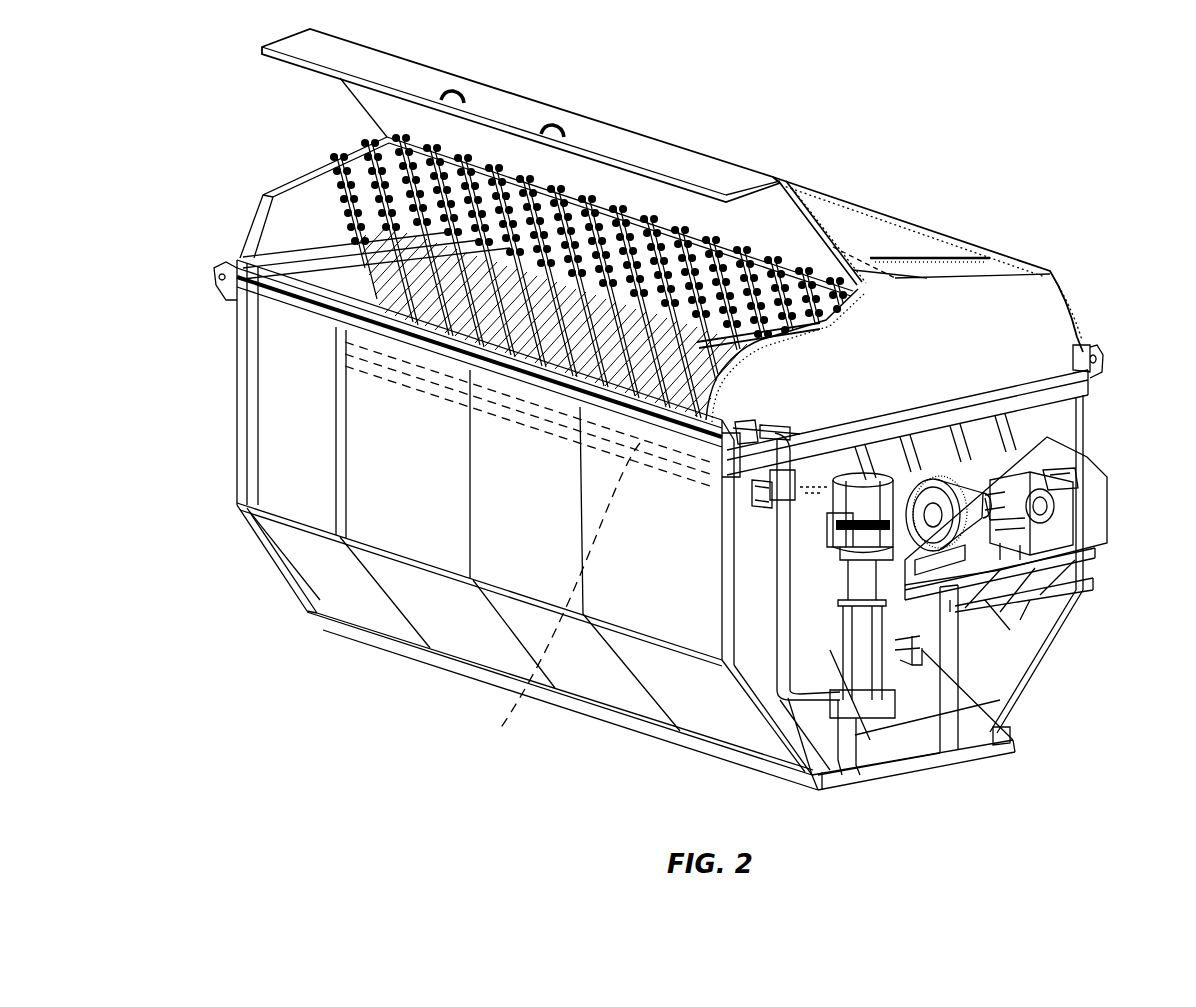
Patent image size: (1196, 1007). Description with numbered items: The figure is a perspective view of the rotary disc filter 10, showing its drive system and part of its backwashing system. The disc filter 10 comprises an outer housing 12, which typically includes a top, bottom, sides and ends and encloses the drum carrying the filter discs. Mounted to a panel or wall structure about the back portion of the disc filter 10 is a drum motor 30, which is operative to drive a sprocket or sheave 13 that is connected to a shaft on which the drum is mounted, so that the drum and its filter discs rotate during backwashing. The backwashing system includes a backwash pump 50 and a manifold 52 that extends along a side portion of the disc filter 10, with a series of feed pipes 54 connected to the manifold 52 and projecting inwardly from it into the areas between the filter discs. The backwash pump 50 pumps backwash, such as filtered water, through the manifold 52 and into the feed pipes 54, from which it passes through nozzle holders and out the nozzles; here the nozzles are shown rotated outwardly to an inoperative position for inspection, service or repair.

The disc filter 10 is at (743, 70).
The outer housing 12 is at (232, 453).
The sprocket or sheave 13 is at (927, 497).
The drum motor 30 is at (1067, 497).
The backwash pump 50 is at (873, 653).
The manifold 52 is at (506, 729).
The feed pipes 54 is at (347, 223).